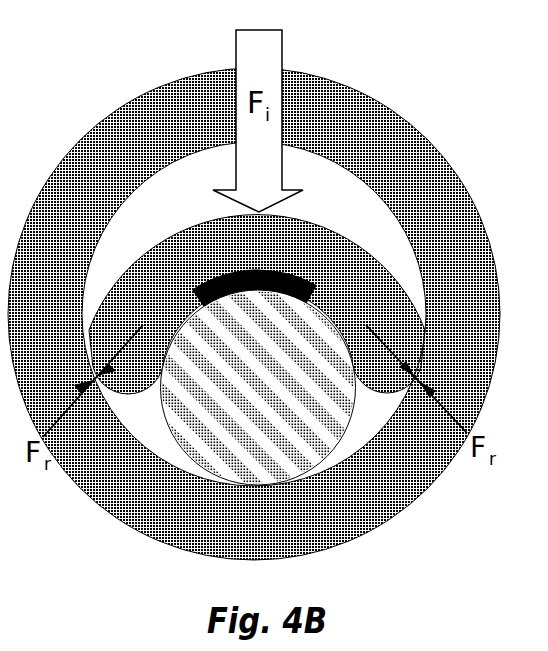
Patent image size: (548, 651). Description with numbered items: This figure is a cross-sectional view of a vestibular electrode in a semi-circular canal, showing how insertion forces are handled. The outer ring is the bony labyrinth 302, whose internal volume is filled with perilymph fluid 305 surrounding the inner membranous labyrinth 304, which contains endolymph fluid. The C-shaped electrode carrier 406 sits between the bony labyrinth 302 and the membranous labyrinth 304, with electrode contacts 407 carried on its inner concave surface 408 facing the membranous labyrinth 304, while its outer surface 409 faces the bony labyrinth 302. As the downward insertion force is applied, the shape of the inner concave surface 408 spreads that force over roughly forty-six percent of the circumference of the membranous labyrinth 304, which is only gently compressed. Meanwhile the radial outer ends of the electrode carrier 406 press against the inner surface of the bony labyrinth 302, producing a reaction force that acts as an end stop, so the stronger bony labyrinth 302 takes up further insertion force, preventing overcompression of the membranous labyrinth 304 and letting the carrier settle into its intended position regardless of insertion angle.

The bony labyrinth 302 is at (394, 143).
The membranous labyrinth 304 is at (230, 452).
The perilymph fluid 305 is at (367, 420).
The electrode carrier 406 is at (349, 290).
The electrode contacts 407 is at (207, 262).
The inner concave surface 408 is at (193, 313).
The outer concave surface 409 is at (310, 225).